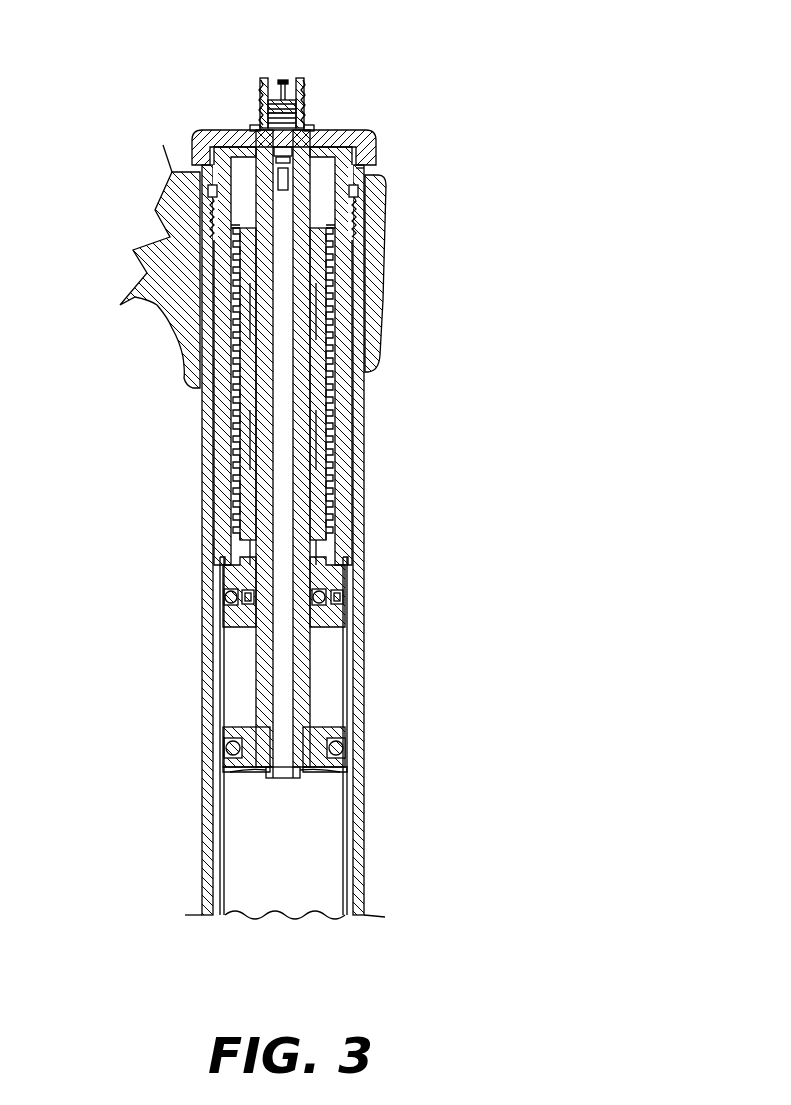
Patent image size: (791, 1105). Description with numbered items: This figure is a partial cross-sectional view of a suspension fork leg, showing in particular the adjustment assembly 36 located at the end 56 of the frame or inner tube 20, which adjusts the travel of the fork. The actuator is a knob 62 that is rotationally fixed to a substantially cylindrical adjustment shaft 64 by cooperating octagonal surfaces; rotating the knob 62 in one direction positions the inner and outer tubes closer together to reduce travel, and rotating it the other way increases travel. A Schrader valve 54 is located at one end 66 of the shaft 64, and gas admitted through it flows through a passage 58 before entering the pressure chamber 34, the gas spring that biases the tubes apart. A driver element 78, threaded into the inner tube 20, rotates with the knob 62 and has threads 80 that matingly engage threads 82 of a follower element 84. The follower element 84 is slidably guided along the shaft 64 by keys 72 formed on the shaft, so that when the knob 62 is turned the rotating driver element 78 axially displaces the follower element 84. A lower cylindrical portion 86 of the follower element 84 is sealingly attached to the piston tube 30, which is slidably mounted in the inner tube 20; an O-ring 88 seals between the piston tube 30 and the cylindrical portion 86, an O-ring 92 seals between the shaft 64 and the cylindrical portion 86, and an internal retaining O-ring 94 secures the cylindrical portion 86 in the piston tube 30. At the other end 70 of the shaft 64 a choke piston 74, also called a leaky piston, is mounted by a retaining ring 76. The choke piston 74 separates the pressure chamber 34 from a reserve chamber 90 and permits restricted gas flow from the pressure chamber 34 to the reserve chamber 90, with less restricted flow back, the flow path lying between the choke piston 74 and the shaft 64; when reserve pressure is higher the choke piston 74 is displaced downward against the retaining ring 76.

The inner tube 20 is at (204, 465).
The piston tube 30 is at (208, 657).
The pressure chamber 34 is at (308, 830).
The adjustment assembly 36 is at (114, 328).
The Schrader valve 54 is at (283, 80).
The end of the inner tube 56 is at (404, 139).
The passage 58 is at (286, 693).
The knob 62 is at (342, 131).
The shaft 64 is at (305, 228).
The end of the shaft 66 is at (300, 102).
The another end of the shaft 70 is at (268, 780).
The keys 72 is at (306, 355).
The choke piston 74 is at (340, 445).
The retaining ring 76 is at (334, 777).
The driver element 78 is at (358, 171).
The threads 80 is at (330, 272).
The threads 82 is at (340, 480).
The follower element 84 is at (340, 535).
The cylindrical portion 86 is at (220, 558).
The O-ring 88 is at (340, 590).
The reserve chamber 90 is at (330, 653).
The O-ring 92 is at (225, 596).
The internal retaining O-ring 94 is at (340, 556).